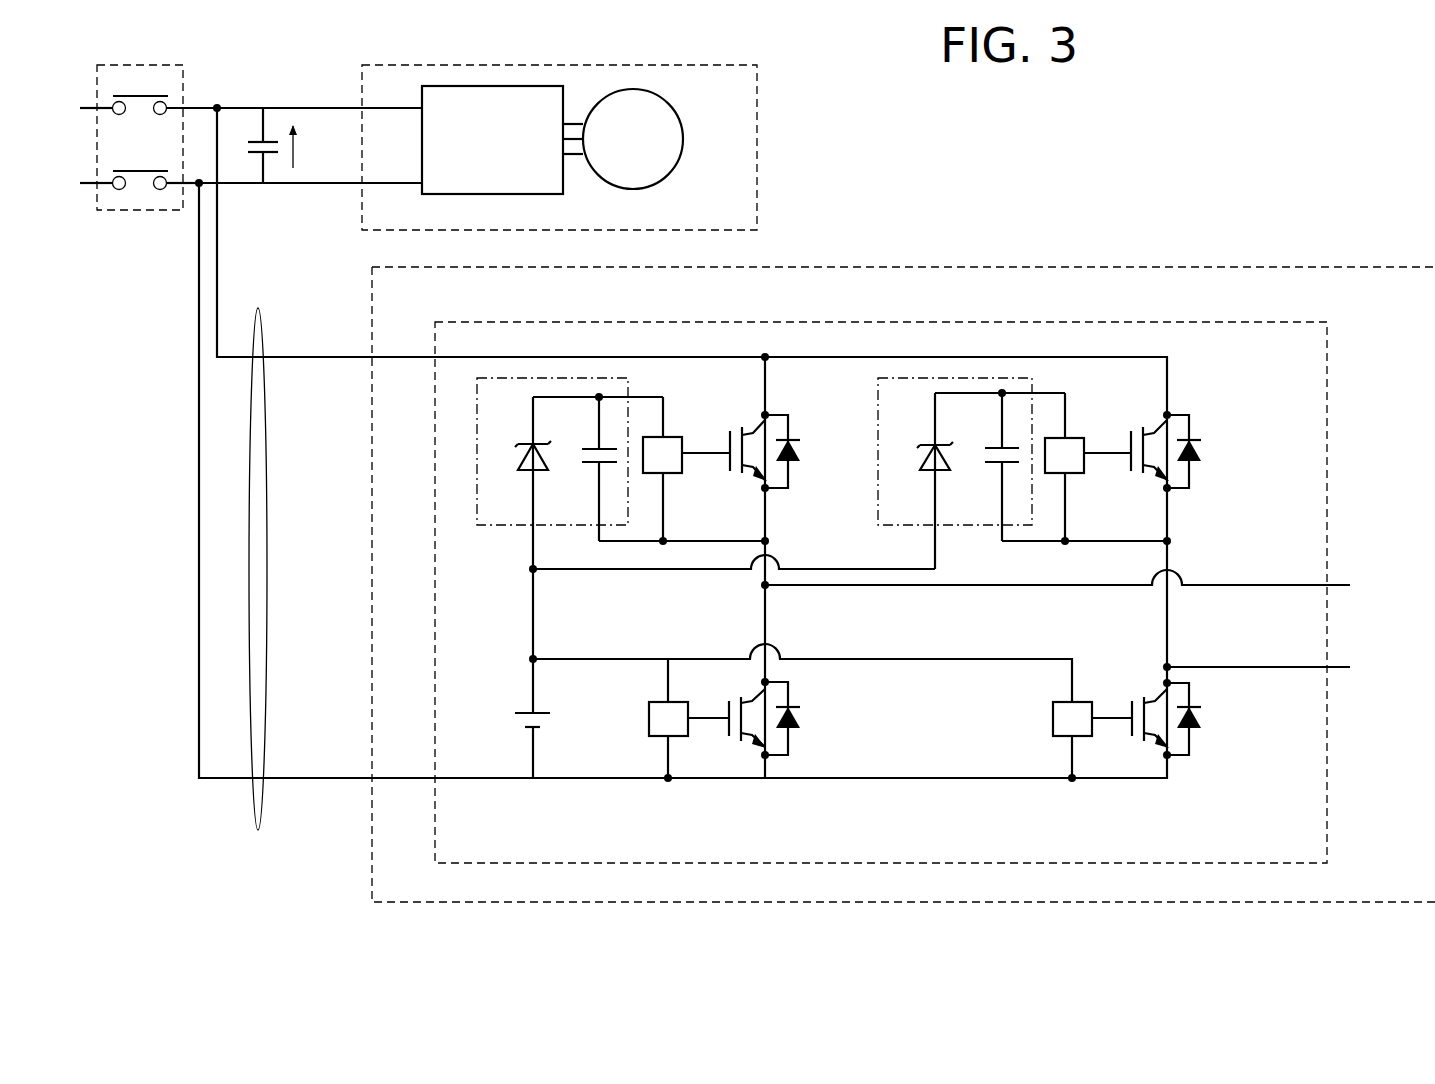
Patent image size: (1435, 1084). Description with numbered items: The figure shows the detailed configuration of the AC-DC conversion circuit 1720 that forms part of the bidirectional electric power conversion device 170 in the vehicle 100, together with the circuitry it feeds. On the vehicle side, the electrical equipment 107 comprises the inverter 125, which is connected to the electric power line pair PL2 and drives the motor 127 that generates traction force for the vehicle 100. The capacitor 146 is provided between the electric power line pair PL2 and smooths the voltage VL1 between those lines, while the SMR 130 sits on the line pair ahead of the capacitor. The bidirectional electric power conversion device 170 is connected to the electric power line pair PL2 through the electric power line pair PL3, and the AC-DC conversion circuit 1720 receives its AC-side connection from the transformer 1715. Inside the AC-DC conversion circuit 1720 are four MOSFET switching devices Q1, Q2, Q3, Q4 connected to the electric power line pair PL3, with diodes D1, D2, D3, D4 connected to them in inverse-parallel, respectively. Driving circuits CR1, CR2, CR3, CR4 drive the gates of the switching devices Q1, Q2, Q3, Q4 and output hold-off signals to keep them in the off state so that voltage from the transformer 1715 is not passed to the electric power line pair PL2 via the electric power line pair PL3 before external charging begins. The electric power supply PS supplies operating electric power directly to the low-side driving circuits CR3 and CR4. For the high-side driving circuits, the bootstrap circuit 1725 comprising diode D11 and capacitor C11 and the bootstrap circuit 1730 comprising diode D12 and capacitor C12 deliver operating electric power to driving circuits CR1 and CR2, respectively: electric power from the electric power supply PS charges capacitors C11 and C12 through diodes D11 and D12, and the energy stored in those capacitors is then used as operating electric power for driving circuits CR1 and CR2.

The vehicle 100 is at (1365, 170).
The electrical equipment 107 is at (598, 147).
The inverter 125 is at (490, 195).
The motor 127 is at (682, 128).
The SMR 130 is at (144, 211).
The capacitor 146 is at (256, 140).
The bidirectional electric power conversion device 170 is at (1302, 267).
The AC-DC conversion circuit 1720 is at (1187, 322).
The bootstrap circuit 1725 is at (611, 518).
The bootstrap circuit 1730 is at (1000, 473).
The transformer 1715 is at (1090, 625).
The electric power line pair PL2 is at (327, 197).
The electric power line pair PL3 is at (245, 347).
The voltage VL1 is at (318, 147).
The diode D11 is at (512, 452).
The capacitor C11 is at (593, 468).
The driving circuit CR1 is at (676, 430).
The switching device Q1 is at (745, 461).
The diode D1 is at (800, 451).
The diode D12 is at (915, 452).
The capacitor C12 is at (995, 468).
The driving circuit CR2 is at (1078, 430).
The switching device Q2 is at (1147, 461).
The diode D2 is at (1200, 451).
The electric power supply PS is at (512, 700).
The driving circuit CR3 is at (641, 723).
The switching device Q3 is at (744, 724).
The diode D3 is at (798, 718).
The driving circuit CR4 is at (1045, 712).
The switching device Q4 is at (1144, 725).
The diode D4 is at (1201, 719).